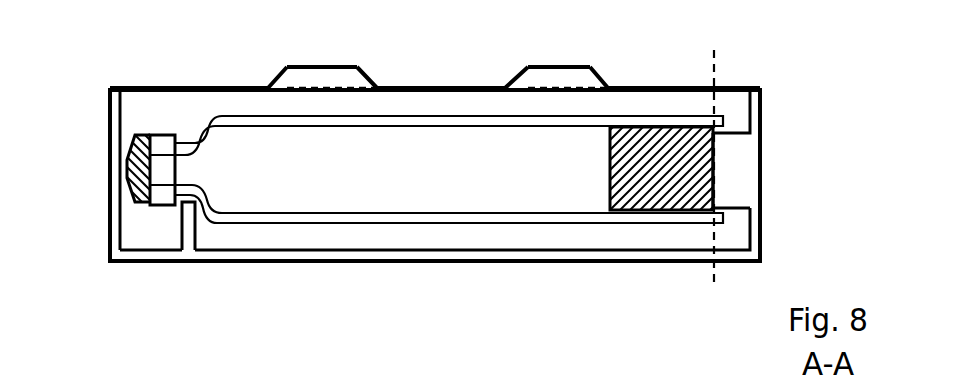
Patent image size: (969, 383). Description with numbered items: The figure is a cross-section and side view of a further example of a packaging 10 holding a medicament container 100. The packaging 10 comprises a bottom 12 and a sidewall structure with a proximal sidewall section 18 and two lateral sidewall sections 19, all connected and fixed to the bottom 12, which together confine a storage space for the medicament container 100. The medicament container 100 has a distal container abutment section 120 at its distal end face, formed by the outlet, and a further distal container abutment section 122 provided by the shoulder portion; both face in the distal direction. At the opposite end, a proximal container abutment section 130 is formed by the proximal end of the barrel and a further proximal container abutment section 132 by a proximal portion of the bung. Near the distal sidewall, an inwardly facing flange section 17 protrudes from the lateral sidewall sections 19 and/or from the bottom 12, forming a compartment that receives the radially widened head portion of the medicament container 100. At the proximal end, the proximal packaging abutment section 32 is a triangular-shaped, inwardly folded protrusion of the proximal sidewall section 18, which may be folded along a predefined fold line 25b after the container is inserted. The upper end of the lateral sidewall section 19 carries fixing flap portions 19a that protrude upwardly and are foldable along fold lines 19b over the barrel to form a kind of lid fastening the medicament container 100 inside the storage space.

The packaging 10 is at (402, 56).
The bottom 12 is at (443, 253).
The flange section 17 is at (190, 230).
The proximal sidewall section 18 is at (755, 108).
The lateral sidewall section 19 is at (475, 103).
The fixing flap portion 19a is at (330, 72).
The fold line 19b is at (287, 88).
The fold line 25b is at (717, 73).
The proximal packaging abutment section 32 is at (735, 167).
The medicament container 100 is at (644, 93).
The distal container abutment section 120 is at (95, 134).
The distal container abutment section 122 is at (204, 101).
The proximal container abutment section 130 is at (723, 217).
The proximal container abutment section 132 is at (724, 126).